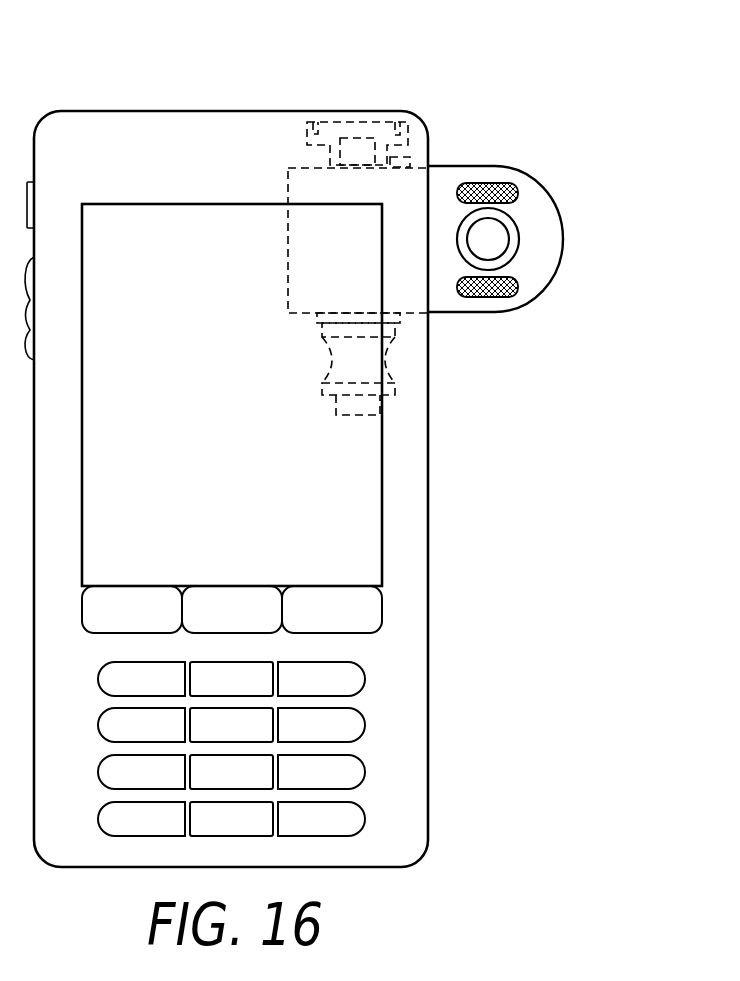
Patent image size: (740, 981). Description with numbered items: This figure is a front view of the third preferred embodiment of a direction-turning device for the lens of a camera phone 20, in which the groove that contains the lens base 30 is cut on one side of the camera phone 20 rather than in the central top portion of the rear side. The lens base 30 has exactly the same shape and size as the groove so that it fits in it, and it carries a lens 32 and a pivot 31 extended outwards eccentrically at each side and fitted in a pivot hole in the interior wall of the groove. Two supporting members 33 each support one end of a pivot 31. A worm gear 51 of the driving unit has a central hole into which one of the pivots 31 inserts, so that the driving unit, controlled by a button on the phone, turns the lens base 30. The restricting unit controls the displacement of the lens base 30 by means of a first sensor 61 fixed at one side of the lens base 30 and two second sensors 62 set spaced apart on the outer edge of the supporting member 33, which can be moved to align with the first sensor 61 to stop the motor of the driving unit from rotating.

The camera phone 20 is at (402, 518).
The lens base 30 is at (538, 247).
The pivot 31 is at (362, 150).
The lens 32 is at (488, 242).
The supporting member 33 is at (360, 120).
The worm gear 51 is at (370, 372).
The first sensor 61 is at (410, 165).
The second sensor 62 is at (313, 122).